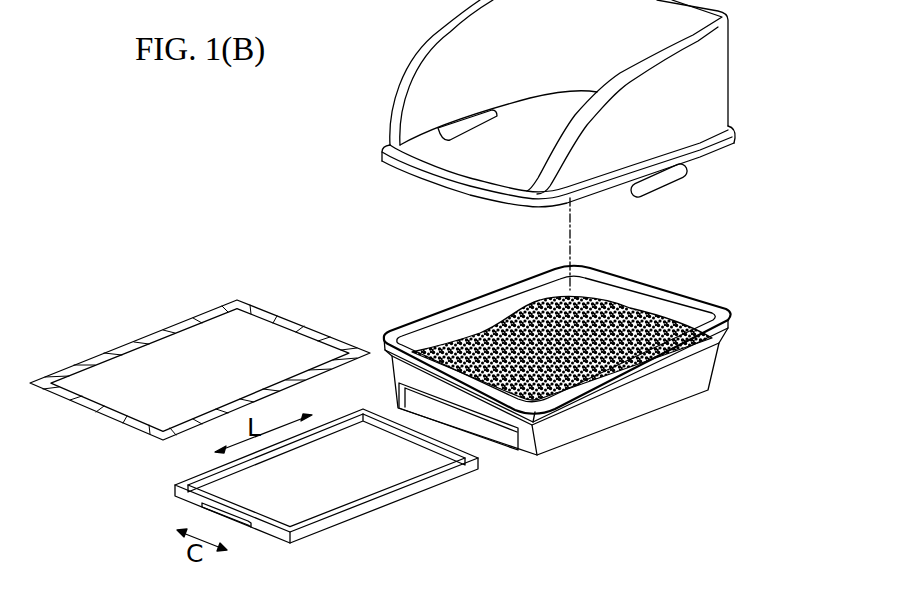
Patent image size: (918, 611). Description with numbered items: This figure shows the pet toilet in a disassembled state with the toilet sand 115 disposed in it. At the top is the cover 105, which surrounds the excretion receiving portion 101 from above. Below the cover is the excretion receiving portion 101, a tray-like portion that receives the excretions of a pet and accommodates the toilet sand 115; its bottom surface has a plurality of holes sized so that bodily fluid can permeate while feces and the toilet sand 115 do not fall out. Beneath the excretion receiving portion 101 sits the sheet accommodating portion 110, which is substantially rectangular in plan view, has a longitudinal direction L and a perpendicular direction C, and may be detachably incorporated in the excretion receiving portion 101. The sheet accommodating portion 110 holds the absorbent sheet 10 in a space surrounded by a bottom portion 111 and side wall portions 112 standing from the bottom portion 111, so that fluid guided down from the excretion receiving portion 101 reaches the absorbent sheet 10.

The absorbent sheet 10 is at (223, 283).
The excretion receiving portion 101 is at (588, 347).
The cover 105 is at (713, 70).
The sheet accommodating portion 110 is at (360, 487).
The bottom portion 111 is at (327, 500).
The side wall portions 112 is at (433, 448).
The toilet sand 115 is at (640, 317).